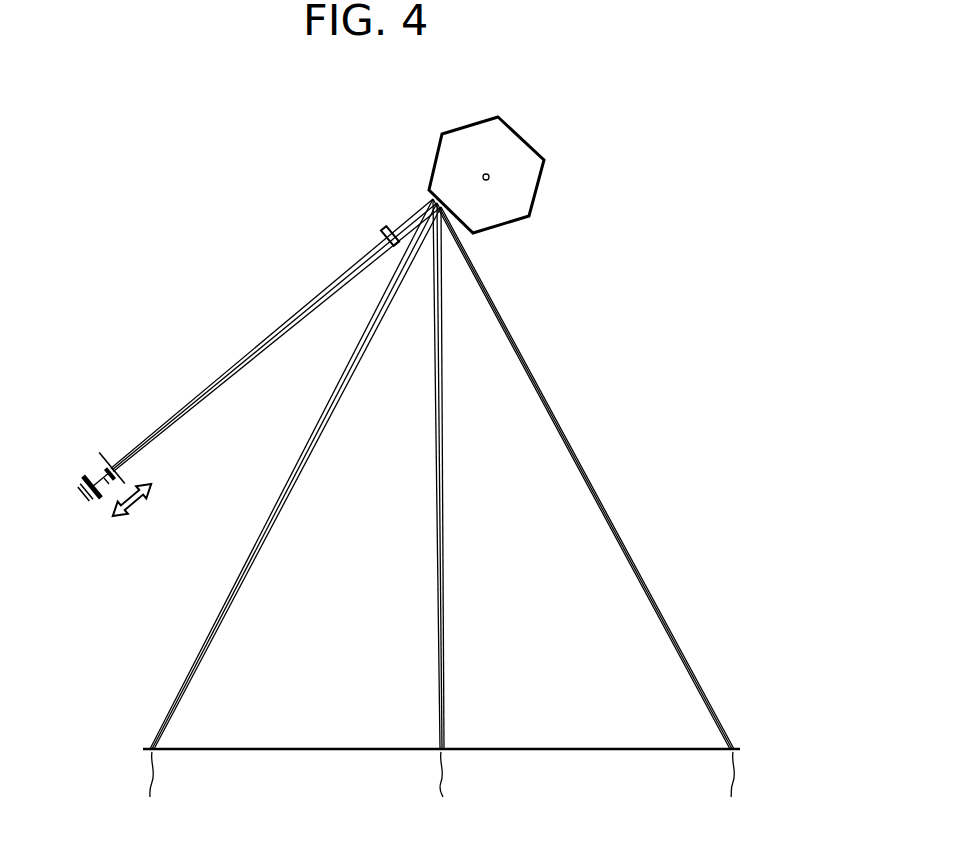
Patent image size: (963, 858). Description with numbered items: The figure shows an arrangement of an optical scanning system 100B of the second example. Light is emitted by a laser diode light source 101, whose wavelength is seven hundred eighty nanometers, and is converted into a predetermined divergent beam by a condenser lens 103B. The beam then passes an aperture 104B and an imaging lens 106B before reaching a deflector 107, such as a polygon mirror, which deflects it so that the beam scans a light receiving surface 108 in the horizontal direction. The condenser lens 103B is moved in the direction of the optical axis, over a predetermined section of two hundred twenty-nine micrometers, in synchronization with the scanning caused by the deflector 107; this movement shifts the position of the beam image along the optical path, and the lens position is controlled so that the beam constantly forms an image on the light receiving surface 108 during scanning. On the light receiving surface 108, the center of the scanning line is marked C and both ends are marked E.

The optical scanning system 100B is at (707, 142).
The laser diode light source 101 is at (92, 505).
The condenser lens 103B is at (90, 471).
The aperture 104B is at (102, 456).
The imaging lens 106B is at (386, 232).
The deflector 107 is at (524, 187).
The light receiving surface 108 is at (577, 752).